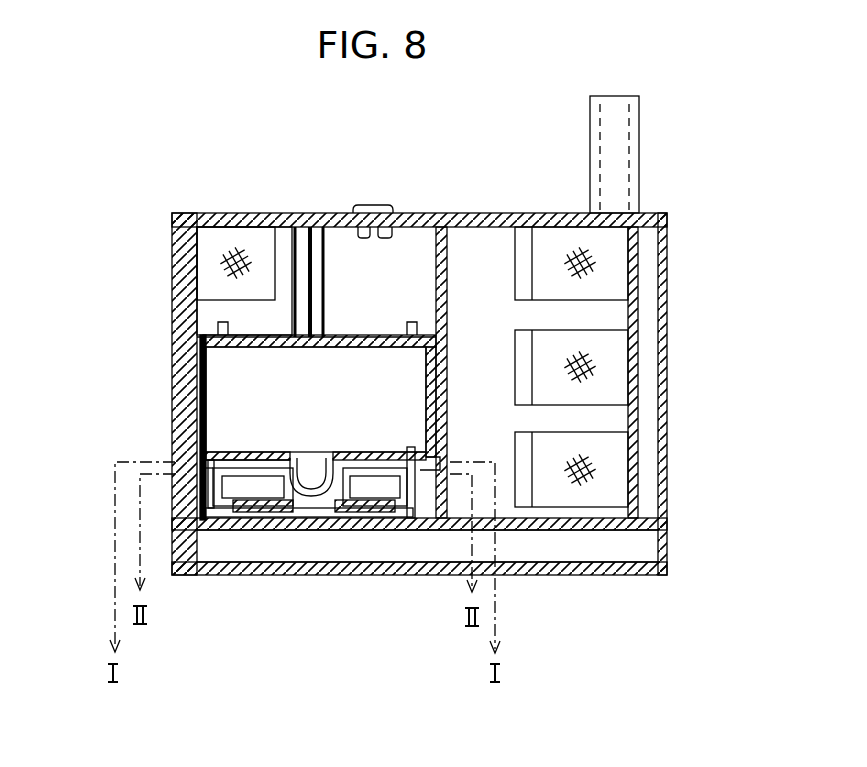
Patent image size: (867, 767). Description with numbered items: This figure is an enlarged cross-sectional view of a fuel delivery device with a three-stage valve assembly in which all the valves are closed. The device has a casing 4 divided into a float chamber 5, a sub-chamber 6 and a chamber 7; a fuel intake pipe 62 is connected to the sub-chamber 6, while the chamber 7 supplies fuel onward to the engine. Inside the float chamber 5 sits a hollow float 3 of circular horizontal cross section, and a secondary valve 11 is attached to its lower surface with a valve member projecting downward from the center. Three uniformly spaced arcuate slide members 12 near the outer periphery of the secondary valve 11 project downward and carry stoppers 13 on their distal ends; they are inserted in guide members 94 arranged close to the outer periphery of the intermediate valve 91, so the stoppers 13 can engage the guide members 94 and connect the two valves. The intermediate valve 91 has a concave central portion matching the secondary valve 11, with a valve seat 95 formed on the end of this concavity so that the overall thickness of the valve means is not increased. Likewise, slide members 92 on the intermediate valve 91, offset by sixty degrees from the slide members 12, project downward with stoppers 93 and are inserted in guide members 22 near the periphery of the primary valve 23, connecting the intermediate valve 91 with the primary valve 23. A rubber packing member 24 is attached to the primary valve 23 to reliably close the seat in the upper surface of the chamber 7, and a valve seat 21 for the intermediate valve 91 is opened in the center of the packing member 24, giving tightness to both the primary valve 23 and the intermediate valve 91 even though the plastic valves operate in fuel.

The casing 4 is at (272, 214).
The secondary valve 11 is at (310, 478).
The slide members 12 is at (444, 466).
The stoppers 13 is at (448, 440).
The fuel intake pipe 62 is at (635, 142).
The float chamber 5 is at (328, 285).
The float 3 is at (215, 383).
The sub-chamber 6 is at (477, 391).
The chamber 7 is at (567, 561).
The intermediate valve 91 is at (268, 460).
The guide members 22 is at (213, 476).
The slide members 92 is at (235, 496).
The stoppers 93 is at (240, 510).
The primary valve 23 is at (245, 512).
The valve seat 21 is at (278, 512).
The valve seat 95 is at (320, 500).
The packing member 24 is at (365, 512).
The guide members 94 is at (409, 520).